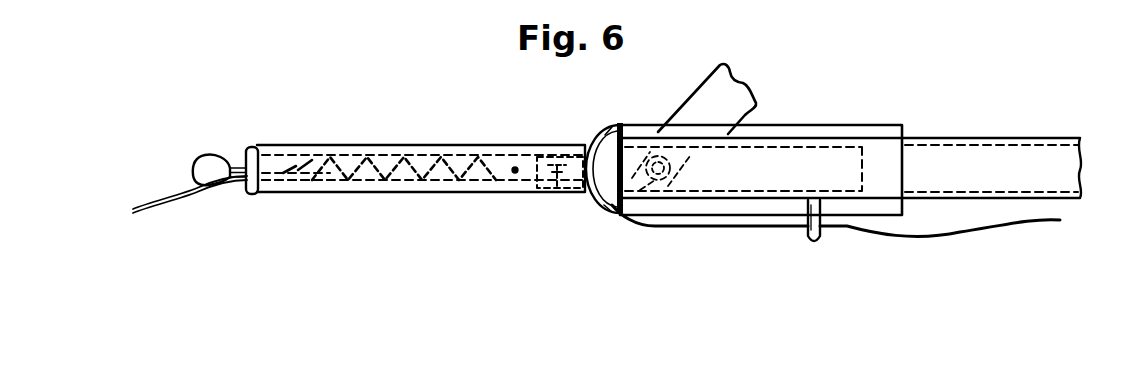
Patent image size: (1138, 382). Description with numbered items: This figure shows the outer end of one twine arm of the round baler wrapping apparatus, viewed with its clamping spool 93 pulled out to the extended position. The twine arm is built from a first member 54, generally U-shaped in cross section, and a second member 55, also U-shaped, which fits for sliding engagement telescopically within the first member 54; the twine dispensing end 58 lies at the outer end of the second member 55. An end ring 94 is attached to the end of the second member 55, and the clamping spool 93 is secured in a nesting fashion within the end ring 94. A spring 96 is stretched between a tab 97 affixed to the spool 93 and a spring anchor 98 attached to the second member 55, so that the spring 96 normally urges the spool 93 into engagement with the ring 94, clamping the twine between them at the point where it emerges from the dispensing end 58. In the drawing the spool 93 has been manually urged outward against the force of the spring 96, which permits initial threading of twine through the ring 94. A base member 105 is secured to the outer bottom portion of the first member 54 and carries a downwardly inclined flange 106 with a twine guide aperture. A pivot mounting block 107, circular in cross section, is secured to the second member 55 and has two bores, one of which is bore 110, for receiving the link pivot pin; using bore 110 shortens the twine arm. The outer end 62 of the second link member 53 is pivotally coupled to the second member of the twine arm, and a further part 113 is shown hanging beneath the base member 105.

The second link member 53 is at (760, 74).
The first member 54 is at (1006, 138).
The second member 55 is at (318, 145).
The twine dispensing end 58 is at (263, 248).
The outer end 62 is at (720, 110).
The clamping spool 93 is at (200, 156).
The end ring 94 is at (249, 147).
The spring 96 is at (348, 160).
The tab 97 is at (274, 172).
The spring anchor 98 is at (515, 168).
The base member 105 is at (860, 125).
The downwardly inclined flange 106 is at (590, 128).
The pivot mounting block 107 is at (578, 158).
The bore 110 is at (557, 173).
The electrical connector 113 is at (814, 247).